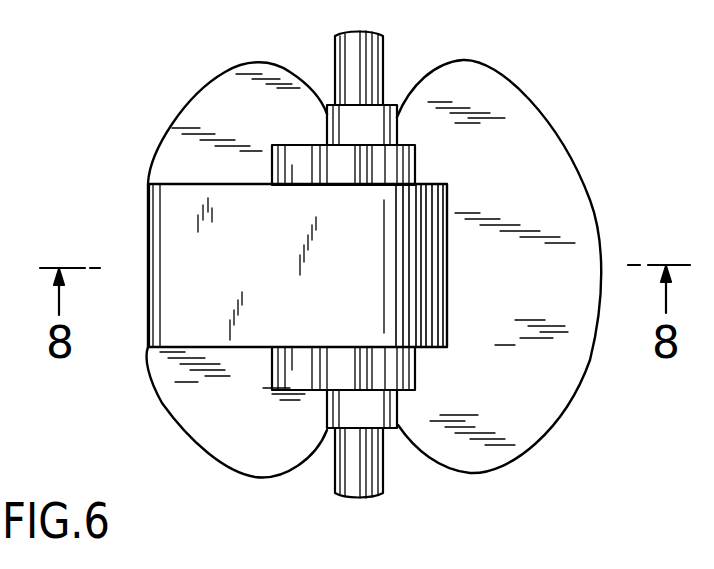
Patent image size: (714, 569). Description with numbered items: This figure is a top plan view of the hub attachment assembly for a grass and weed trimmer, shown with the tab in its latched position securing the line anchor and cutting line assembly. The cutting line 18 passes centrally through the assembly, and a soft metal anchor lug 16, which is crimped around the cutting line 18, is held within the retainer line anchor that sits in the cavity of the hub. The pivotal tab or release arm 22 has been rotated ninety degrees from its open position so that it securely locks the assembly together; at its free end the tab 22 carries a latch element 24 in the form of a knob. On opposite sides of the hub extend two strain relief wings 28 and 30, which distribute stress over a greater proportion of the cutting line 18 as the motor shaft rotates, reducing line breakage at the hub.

The anchor lug 16 is at (416, 366).
The cutting line 18 is at (383, 64).
The tab 22 is at (260, 273).
The latch element 24 is at (148, 256).
The strain relief wing 28 is at (561, 188).
The strain relief wing 30 is at (192, 132).